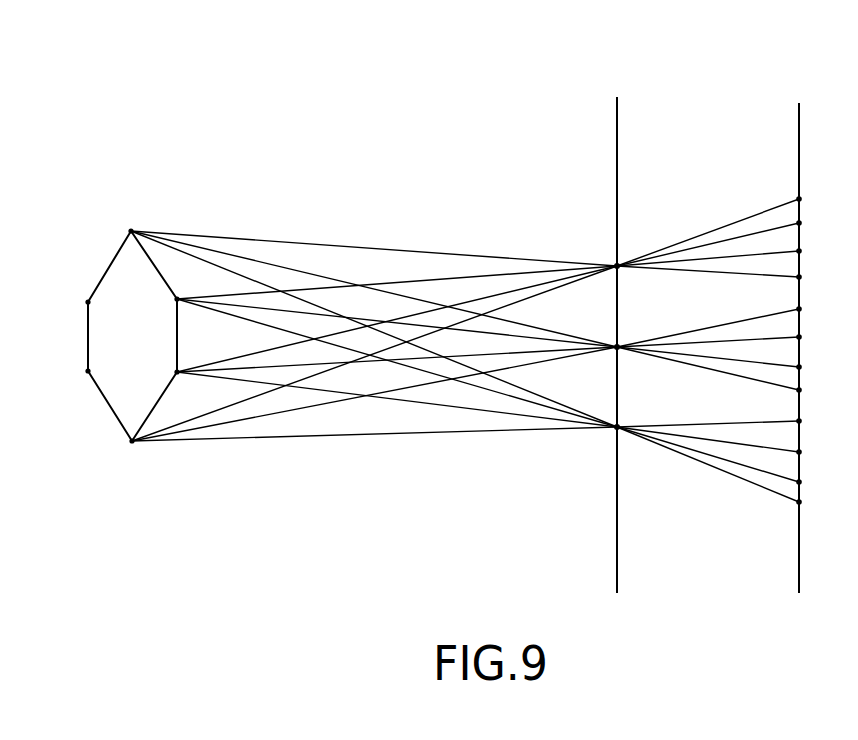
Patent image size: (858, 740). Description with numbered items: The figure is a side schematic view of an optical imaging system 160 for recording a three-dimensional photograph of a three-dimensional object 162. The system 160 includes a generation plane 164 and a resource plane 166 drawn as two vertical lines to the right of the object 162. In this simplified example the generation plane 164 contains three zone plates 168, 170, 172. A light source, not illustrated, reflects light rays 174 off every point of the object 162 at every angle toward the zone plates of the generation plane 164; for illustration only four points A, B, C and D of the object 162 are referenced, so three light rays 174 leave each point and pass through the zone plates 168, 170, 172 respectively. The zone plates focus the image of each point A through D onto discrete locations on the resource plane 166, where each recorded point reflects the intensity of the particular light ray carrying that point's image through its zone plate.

The optical imaging system 160 is at (684, 308).
The three-dimensional object 162 is at (88, 301).
The generation plane 164 is at (616, 157).
The resource plane 166 is at (798, 132).
The zone plate 168 is at (613, 262).
The zone plate 170 is at (615, 345).
The zone plate 172 is at (615, 425).
The light rays 174 is at (301, 226).